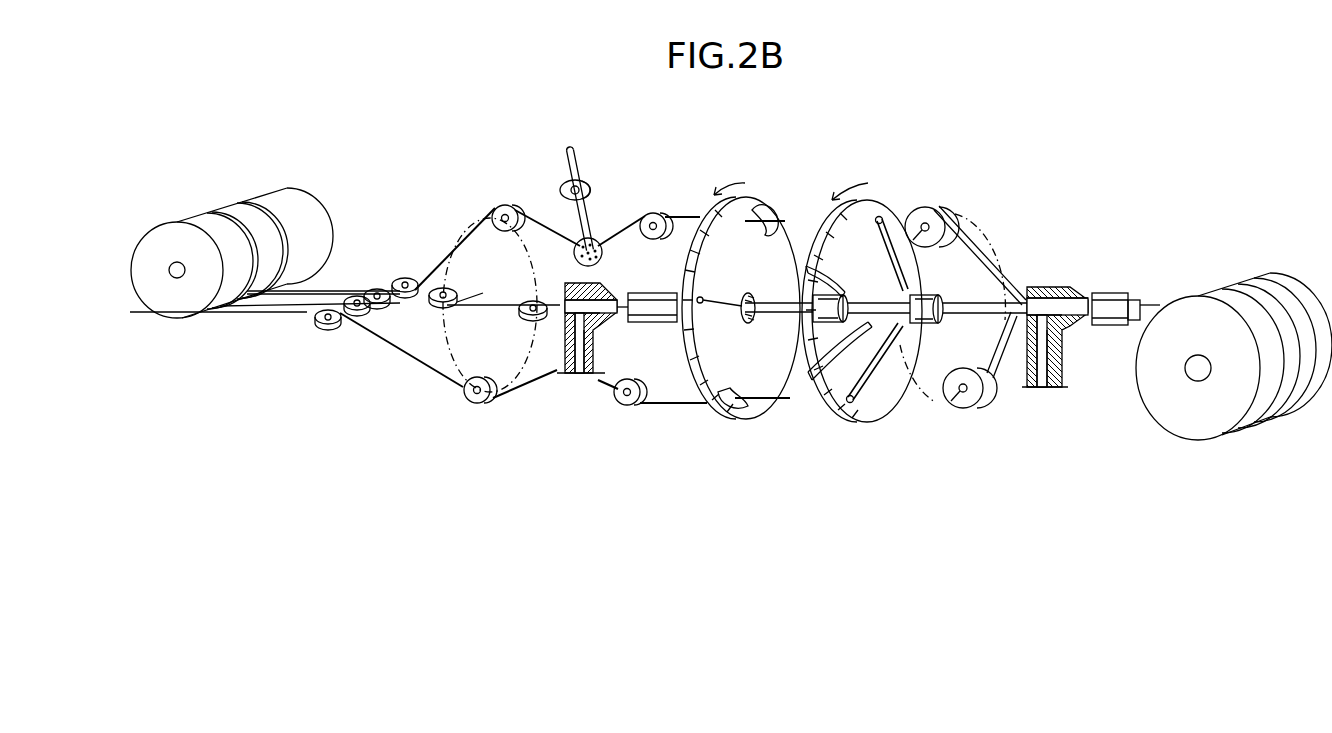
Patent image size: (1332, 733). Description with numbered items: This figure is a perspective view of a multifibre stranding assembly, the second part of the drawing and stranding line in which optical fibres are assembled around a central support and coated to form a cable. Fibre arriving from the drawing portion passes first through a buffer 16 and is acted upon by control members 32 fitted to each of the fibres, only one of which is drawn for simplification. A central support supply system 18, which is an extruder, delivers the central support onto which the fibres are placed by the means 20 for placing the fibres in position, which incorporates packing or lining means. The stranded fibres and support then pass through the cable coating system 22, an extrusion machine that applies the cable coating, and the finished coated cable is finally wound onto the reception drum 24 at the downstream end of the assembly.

The buffer 16 is at (329, 206).
The central support supply system 18 is at (590, 350).
The means for placing the fibres in position on the central support 20 is at (800, 418).
The cable coating system 22 is at (1046, 388).
The reception drum 24 is at (1168, 415).
The control members 32 is at (600, 218).